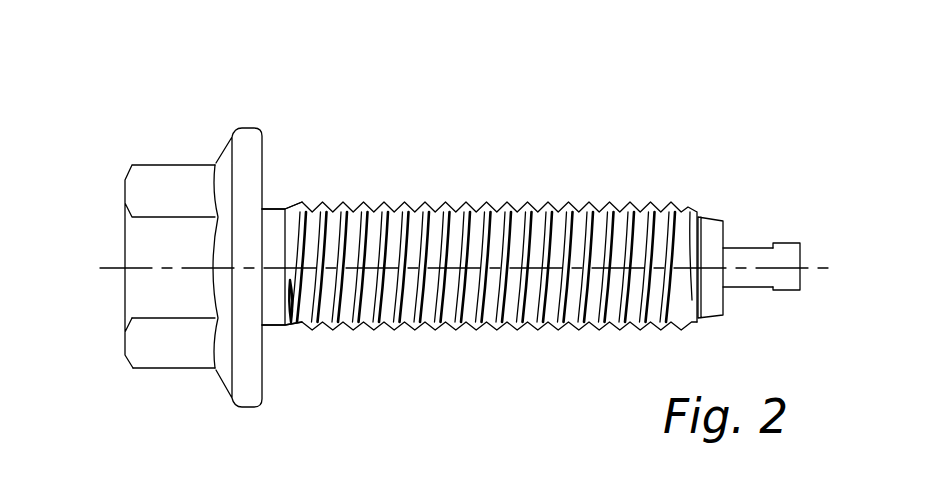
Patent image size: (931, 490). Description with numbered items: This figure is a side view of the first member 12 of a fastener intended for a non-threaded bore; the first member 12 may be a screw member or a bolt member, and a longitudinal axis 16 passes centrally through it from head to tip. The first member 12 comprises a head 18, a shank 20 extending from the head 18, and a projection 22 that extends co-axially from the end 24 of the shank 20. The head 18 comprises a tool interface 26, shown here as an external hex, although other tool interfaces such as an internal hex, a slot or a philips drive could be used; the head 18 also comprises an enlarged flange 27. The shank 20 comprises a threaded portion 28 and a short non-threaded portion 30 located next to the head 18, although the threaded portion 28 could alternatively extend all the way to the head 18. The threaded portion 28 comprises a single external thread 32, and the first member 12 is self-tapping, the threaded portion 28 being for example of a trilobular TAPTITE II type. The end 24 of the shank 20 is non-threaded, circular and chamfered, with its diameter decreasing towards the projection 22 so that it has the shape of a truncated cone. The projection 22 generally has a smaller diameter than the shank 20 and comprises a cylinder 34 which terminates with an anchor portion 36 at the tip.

The first member 12 is at (323, 109).
The longitudinal axis 16 is at (117, 268).
The head 18 is at (140, 303).
The shank 20 is at (469, 185).
The projection 22 is at (776, 258).
The end of the shank 24 is at (712, 217).
The tool interface 26 is at (142, 348).
The enlarged flange 27 is at (247, 395).
The threaded portion 28 is at (482, 273).
The non-threaded portion 30 is at (270, 325).
The external thread 32 is at (527, 203).
The cylinder 34 is at (753, 287).
The anchor portion 36 is at (787, 287).